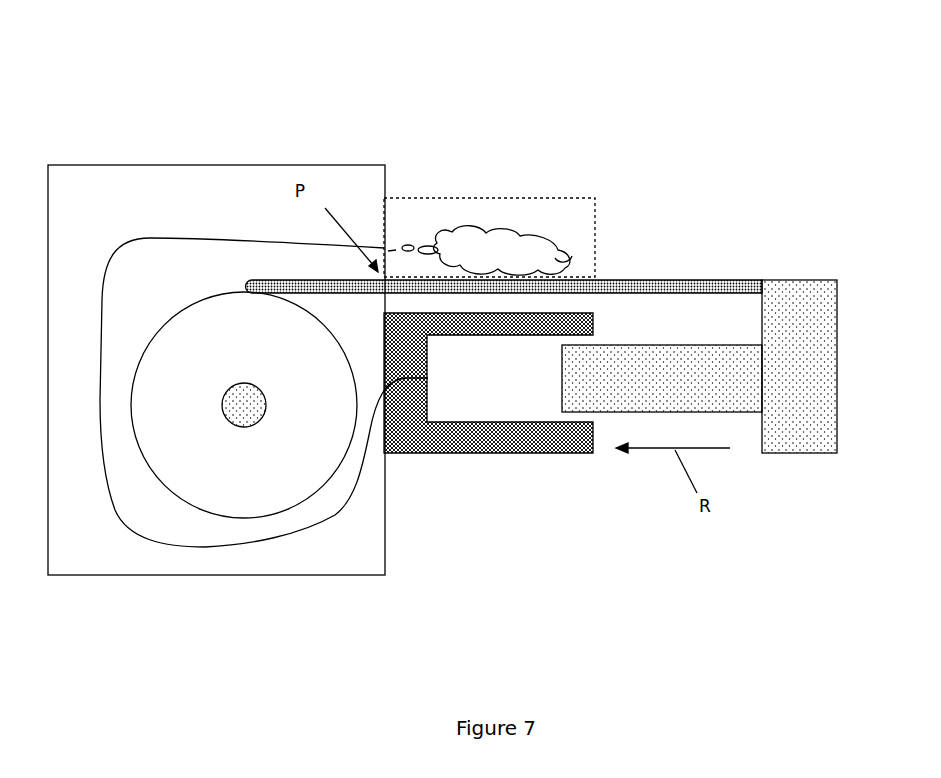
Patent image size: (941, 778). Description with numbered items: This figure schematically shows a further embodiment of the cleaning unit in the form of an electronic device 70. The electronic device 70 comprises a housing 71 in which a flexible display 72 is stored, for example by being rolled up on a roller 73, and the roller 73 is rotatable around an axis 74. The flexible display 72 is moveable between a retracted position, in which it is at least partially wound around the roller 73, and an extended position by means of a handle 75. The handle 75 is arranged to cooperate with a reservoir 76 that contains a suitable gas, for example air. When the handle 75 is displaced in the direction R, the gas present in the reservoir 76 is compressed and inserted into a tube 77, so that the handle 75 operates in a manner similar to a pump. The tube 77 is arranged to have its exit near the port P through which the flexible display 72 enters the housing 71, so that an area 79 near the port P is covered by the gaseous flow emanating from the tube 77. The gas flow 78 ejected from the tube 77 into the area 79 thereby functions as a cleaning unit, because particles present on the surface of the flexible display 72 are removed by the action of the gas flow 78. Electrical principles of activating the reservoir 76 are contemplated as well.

The electronic device 70 is at (318, 40).
The housing 71 is at (127, 165).
The flexible display 72 is at (672, 277).
The roller 73 is at (176, 313).
The axis 74 is at (246, 403).
The handle 75 is at (822, 450).
The reservoir 76 is at (520, 435).
The tube 77 is at (263, 545).
The gas flow 78 is at (497, 243).
The area 79 is at (562, 198).